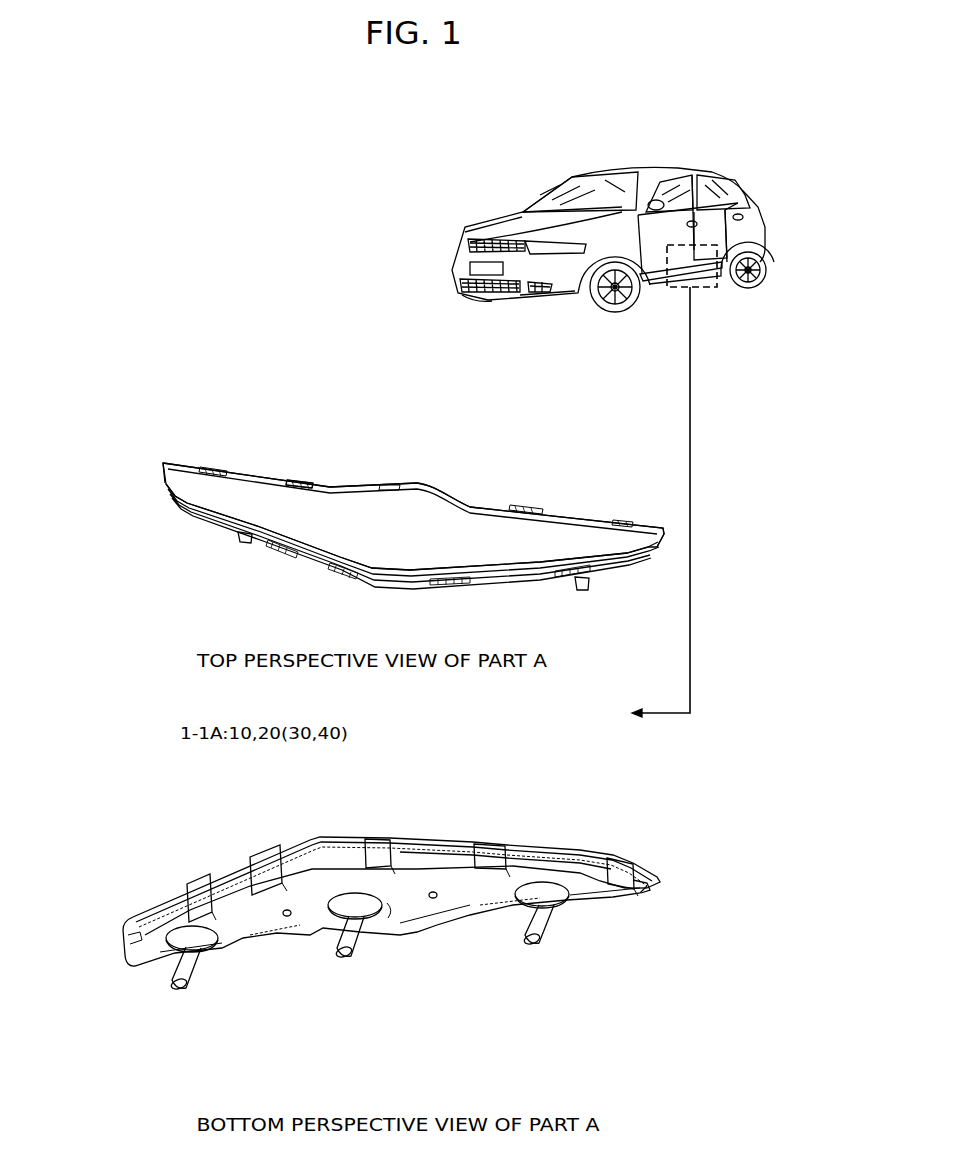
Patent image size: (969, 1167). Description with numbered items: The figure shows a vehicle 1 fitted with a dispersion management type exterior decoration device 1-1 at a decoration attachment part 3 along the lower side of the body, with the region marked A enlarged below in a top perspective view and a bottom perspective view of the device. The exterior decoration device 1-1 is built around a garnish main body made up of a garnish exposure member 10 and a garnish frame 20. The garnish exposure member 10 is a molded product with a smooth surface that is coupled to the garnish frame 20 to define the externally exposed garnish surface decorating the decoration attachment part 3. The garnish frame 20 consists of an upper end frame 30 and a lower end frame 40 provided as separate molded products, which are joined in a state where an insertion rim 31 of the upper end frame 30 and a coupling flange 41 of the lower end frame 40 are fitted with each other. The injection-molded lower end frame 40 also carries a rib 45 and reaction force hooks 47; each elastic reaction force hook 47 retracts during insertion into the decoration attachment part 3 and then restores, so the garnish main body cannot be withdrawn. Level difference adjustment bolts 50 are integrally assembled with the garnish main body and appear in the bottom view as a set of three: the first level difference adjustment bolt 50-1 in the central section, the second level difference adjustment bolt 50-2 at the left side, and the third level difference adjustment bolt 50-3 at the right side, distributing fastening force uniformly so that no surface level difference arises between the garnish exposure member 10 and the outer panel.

The vehicle 1 is at (636, 170).
The decoration attachment part 3 is at (700, 178).
The exterior decoration device 1-1 is at (676, 272).
The part A is at (710, 290).
The garnish exposure member 10 is at (465, 520).
The garnish frame 20 is at (88, 452).
The upper end frame 30 is at (160, 466).
The insertion rim 31 is at (585, 860).
The lower end frame 40 is at (160, 490).
The coupling flange 41 is at (407, 840).
The rib 45 is at (645, 897).
The reaction force hook 47 is at (306, 479).
The level difference adjustment bolts 50 is at (278, 1050).
The first level difference adjustment bolt 50-1 is at (351, 955).
The second level difference adjustment bolt 50-2 is at (241, 543).
The third level difference adjustment bolt 50-3 is at (585, 590).